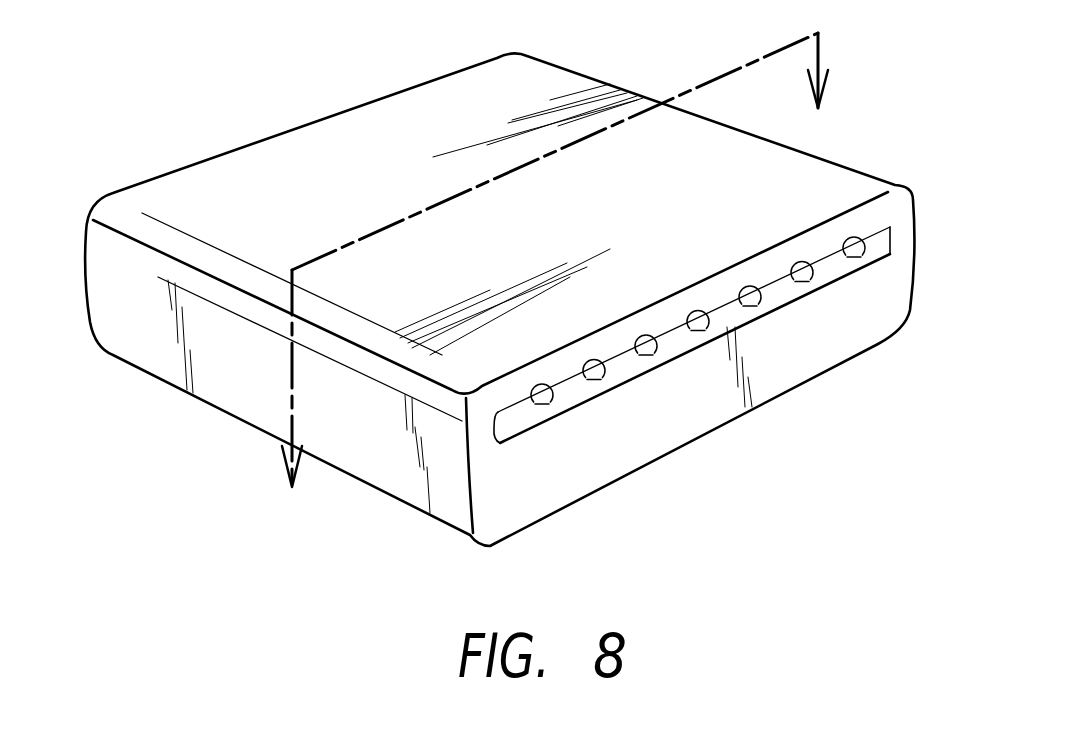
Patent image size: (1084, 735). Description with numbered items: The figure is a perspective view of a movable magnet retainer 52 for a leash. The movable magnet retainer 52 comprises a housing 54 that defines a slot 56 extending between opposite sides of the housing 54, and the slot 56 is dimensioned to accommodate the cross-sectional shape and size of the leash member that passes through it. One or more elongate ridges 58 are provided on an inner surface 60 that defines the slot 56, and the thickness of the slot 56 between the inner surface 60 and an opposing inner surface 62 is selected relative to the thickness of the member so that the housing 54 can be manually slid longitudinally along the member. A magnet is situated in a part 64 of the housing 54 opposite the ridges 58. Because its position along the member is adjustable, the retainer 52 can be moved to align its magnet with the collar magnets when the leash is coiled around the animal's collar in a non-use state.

The movable magnet retainer 52 is at (208, 100).
The housing 54 is at (163, 345).
The slot 56 is at (888, 219).
The elongate ridges 58 is at (600, 385).
The inner surface 60 is at (668, 328).
The opposing inner surface 62 is at (731, 327).
The part of the housing 64 is at (842, 317).